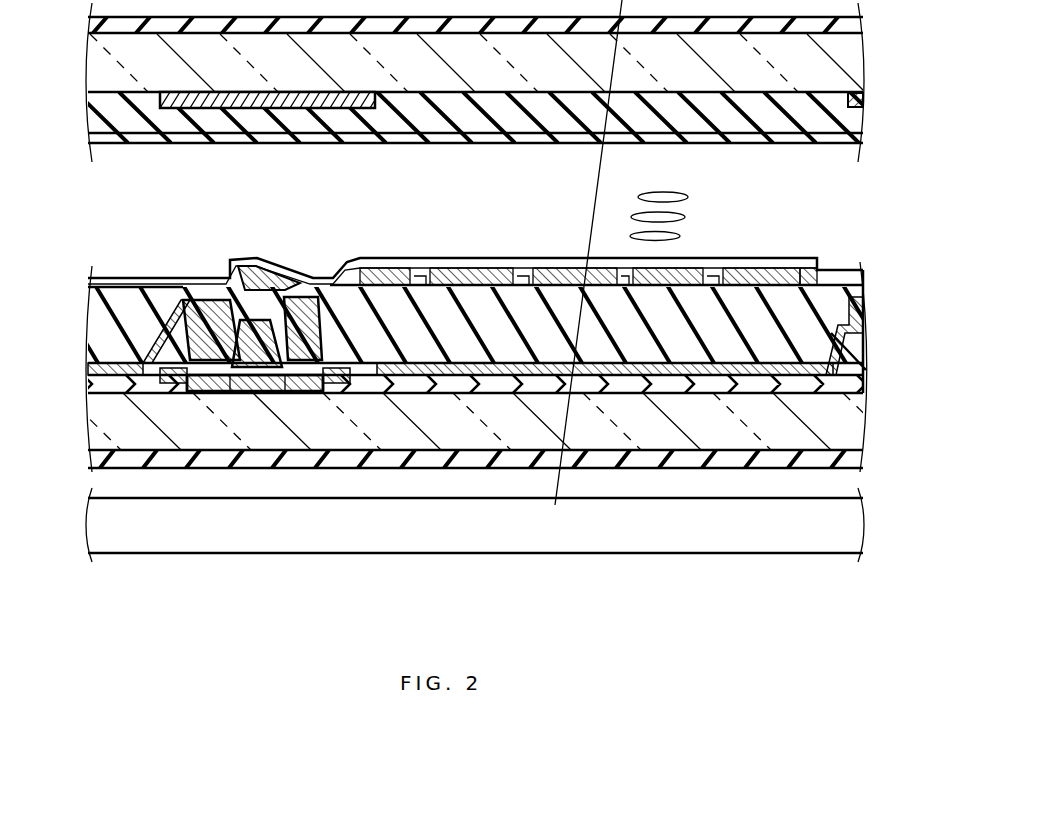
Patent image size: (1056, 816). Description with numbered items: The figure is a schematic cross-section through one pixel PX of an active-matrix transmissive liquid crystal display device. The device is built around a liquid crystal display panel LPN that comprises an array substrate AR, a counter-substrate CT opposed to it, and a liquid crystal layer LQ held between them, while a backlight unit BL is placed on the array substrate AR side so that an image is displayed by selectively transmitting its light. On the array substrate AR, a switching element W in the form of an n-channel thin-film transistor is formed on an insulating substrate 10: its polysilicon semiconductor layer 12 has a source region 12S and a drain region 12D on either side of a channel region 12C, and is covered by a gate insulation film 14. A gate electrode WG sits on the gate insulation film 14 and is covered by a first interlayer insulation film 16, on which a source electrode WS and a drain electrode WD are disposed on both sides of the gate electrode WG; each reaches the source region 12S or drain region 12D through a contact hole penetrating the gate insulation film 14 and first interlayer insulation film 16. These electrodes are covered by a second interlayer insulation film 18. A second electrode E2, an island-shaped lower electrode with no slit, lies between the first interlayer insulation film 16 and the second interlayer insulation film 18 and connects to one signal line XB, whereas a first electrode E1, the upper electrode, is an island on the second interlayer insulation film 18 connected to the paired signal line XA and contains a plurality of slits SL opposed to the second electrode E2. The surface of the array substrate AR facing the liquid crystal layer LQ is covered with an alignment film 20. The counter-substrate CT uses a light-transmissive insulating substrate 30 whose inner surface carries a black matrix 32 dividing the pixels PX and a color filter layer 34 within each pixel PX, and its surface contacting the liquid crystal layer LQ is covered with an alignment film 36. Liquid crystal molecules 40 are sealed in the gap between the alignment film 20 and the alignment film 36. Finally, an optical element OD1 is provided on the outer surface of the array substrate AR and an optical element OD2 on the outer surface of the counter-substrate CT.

The insulating substrate 10 is at (98, 428).
The semiconductor layer 12 is at (258, 457).
The source region 12S is at (197, 392).
The channel region 12C is at (247, 392).
The drain region 12D is at (309, 392).
The gate insulation film 14 is at (95, 389).
The first interlayer insulation film 16 is at (104, 308).
The second interlayer insulation film 18 is at (98, 310).
The alignment film 20 is at (120, 278).
The insulating substrate 30 is at (88, 63).
The black matrix 32 is at (290, 108).
The color filter layer 34 is at (512, 118).
The alignment film 36 is at (88, 140).
The liquid crystal molecules 40 is at (678, 233).
The switching element W is at (290, 425).
The source electrode WS is at (205, 315).
The gate electrode WG is at (252, 335).
The drain electrode WD is at (300, 318).
The signal line XA is at (178, 302).
The signal line XB is at (853, 300).
The slit SL is at (416, 270).
The first electrode E1 is at (418, 276).
The second electrode E2 is at (797, 365).
The optical element OD1 is at (866, 461).
The optical element OD2 is at (865, 22).
The counter-substrate CT is at (472, 118).
The array substrate AR is at (480, 376).
The liquid crystal layer LQ is at (787, 210).
The liquid crystal display panel LPN is at (975, 37).
The backlight unit BL is at (866, 530).
The pixel PX is at (865, 577).